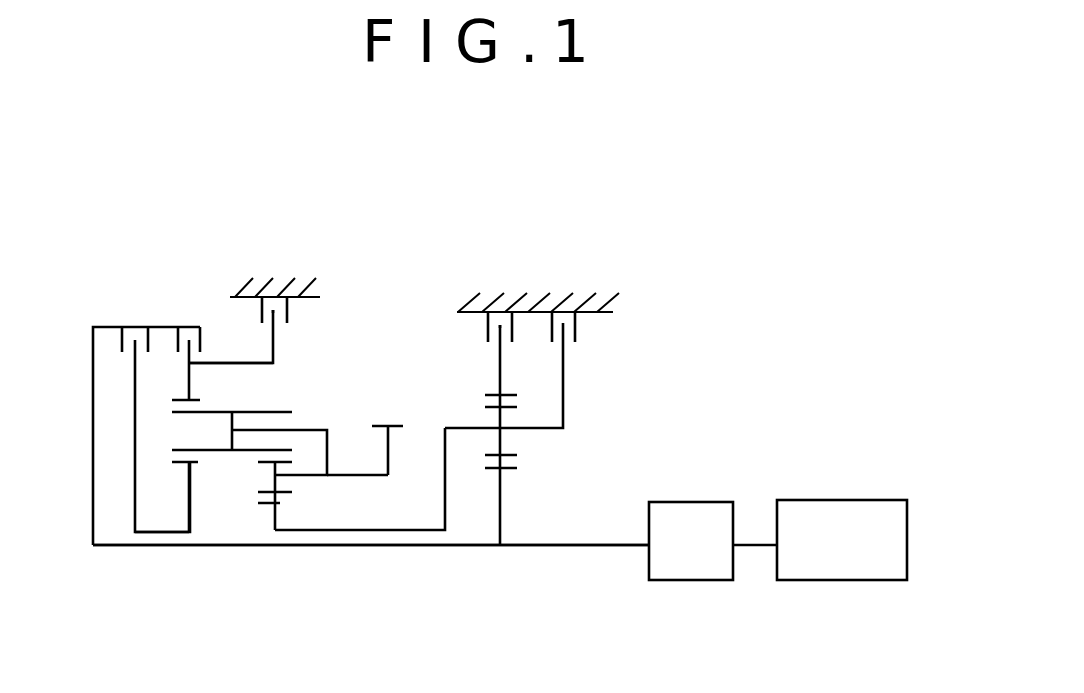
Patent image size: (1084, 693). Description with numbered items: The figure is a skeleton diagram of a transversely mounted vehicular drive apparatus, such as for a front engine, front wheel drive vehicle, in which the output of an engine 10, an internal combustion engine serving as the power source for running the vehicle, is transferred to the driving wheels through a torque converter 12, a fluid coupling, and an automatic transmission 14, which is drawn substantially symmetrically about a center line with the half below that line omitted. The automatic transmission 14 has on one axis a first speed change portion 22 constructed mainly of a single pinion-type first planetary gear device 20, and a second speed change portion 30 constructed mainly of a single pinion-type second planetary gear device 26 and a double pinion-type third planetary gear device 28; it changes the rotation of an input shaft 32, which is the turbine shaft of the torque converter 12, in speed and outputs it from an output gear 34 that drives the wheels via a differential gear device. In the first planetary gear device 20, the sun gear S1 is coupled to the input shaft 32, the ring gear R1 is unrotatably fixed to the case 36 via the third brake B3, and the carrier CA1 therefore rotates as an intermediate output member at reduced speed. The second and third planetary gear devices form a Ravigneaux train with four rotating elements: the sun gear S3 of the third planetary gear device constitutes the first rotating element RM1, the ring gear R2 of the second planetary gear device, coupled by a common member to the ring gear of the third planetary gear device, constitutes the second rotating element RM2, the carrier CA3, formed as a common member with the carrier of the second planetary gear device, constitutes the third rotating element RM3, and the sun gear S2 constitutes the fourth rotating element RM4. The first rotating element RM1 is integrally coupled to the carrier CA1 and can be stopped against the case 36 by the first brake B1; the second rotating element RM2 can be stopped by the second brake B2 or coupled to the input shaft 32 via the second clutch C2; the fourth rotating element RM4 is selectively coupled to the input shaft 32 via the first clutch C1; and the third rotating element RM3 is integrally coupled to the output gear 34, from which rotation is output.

The engine 10 is at (878, 500).
The torque converter 12 is at (705, 500).
The automatic transmission 14 is at (609, 222).
The first planetary gear device 20 is at (498, 566).
The first speed change portion 22 is at (437, 305).
The second planetary gear device 26 is at (198, 560).
The third planetary gear device 28 is at (283, 560).
The second speed change portion 30 is at (349, 273).
The input shaft 32 is at (583, 547).
The output gear 34 is at (397, 426).
The case 36 is at (260, 285).
The first clutch C1 is at (146, 416).
The second clutch C2 is at (185, 343).
The first brake B1 is at (585, 330).
The second brake B2 is at (259, 330).
The third brake B3 is at (478, 330).
The ring gear R1 is at (507, 393).
The ring gear R2 is at (198, 399).
The sun gear S1 is at (507, 468).
The sun gear S2 is at (198, 463).
The sun gear S3 is at (278, 504).
The carrier CA1 is at (565, 407).
The carrier CA3 is at (318, 428).
The first rotating element RM1 is at (348, 538).
The second rotating element RM2 is at (237, 360).
The third rotating element RM3 is at (365, 476).
The fourth rotating element RM4 is at (190, 505).